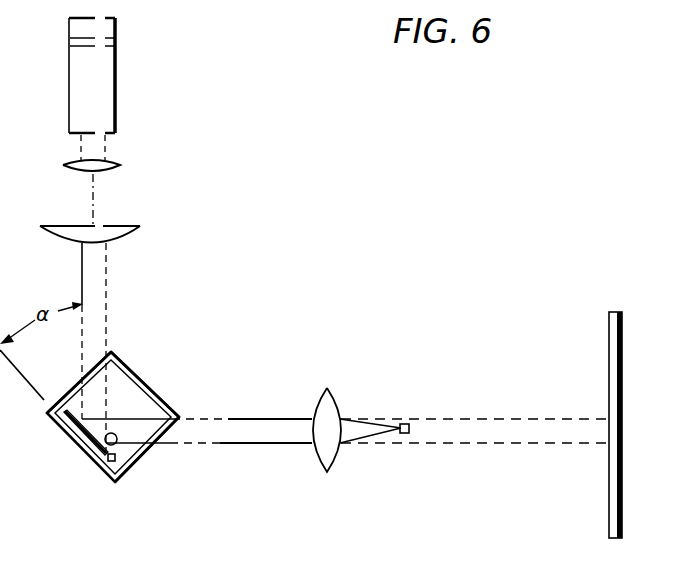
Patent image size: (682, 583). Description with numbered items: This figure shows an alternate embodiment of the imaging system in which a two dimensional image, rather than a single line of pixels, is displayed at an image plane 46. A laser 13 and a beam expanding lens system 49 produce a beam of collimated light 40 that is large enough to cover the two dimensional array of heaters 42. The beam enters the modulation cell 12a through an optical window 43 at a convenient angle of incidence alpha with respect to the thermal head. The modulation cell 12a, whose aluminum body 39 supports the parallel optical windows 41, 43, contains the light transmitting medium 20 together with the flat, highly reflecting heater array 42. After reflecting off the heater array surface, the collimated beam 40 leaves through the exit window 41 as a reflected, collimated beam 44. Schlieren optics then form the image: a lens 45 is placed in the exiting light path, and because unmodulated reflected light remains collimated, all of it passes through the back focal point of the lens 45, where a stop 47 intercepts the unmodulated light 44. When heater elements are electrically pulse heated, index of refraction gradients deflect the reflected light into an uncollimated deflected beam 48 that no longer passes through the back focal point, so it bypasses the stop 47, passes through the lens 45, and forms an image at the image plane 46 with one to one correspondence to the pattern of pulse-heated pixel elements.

The laser 13 is at (115, 63).
The beam expanding lens system 49 is at (128, 192).
The beam of collimated light 40 is at (82, 262).
The modulation cell 12a is at (159, 371).
The light transmitting medium 20 is at (121, 399).
The aluminum body 39 is at (136, 365).
The exit window 41 is at (144, 455).
The optical windows 43 is at (64, 393).
The two dimensional array of heaters 42 is at (100, 462).
The reflected collimated beam 44 is at (232, 419).
The lens 45 is at (333, 462).
The stop 47 is at (403, 424).
The uncollimated deflected beam 48 is at (488, 418).
The image plane 46 is at (608, 342).